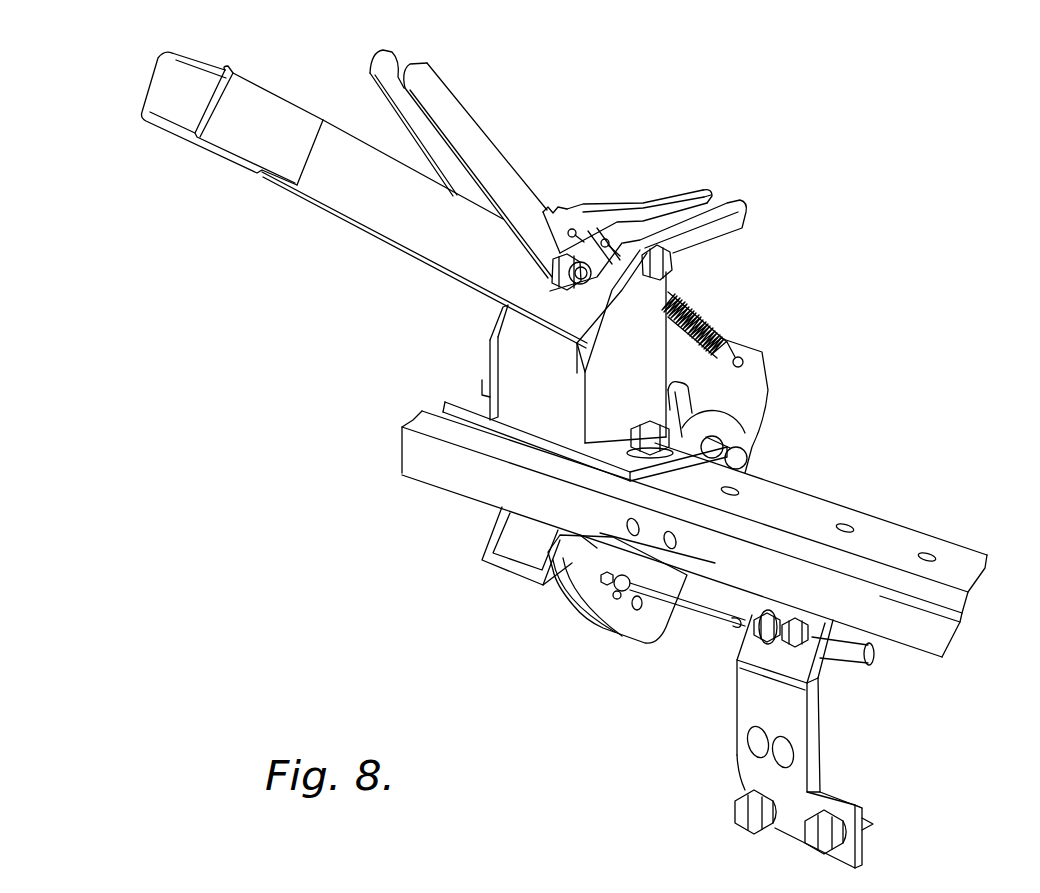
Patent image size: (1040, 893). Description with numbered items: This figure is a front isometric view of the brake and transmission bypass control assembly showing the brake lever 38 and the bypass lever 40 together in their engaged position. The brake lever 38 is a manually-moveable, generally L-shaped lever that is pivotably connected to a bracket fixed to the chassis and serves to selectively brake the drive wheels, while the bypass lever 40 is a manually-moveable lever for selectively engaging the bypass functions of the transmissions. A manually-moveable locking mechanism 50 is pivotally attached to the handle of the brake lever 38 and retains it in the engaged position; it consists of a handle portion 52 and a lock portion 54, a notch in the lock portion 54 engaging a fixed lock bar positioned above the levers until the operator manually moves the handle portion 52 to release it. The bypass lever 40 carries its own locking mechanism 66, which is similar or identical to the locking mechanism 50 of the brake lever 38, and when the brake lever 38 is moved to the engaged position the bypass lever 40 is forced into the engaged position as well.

The brake lever 38 is at (170, 100).
The bypass lever 40 is at (390, 213).
The locking mechanism 50 is at (683, 200).
The handle portion 52 is at (710, 195).
The lock portion 54 is at (395, 67).
The locking mechanism 66 is at (726, 237).